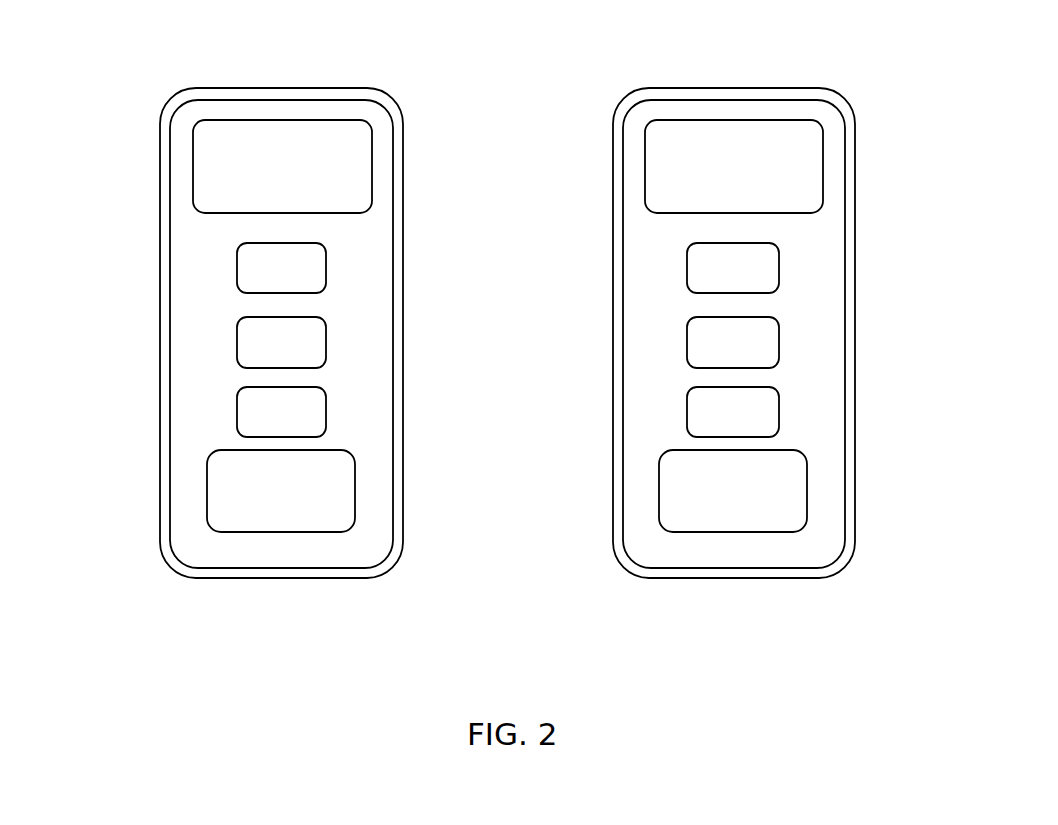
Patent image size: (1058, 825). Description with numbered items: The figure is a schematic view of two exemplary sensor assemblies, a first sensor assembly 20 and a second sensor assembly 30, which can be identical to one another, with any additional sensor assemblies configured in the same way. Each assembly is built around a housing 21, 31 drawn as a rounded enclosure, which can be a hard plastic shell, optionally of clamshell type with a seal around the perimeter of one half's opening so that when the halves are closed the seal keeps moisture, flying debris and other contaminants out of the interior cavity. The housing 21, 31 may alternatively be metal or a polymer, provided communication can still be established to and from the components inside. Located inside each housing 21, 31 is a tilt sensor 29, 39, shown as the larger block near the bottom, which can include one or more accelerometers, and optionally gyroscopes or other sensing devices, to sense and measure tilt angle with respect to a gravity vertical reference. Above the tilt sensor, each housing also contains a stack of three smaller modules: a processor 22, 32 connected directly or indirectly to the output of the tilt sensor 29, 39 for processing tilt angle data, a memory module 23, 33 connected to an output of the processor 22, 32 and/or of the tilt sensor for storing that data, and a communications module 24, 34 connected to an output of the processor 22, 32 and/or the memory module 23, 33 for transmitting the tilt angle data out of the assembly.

The first sensor assembly 20 is at (212, 86).
The housing 21 is at (160, 183).
The processor 22 is at (237, 280).
The memory module 23 is at (237, 343).
The communications module 24 is at (237, 400).
The tilt sensor 29 is at (207, 477).
The second sensor assembly 30 is at (755, 87).
The housing 31 is at (850, 185).
The processor 32 is at (779, 268).
The memory module 33 is at (779, 337).
The communications module 34 is at (779, 407).
The tilt sensor 39 is at (807, 473).